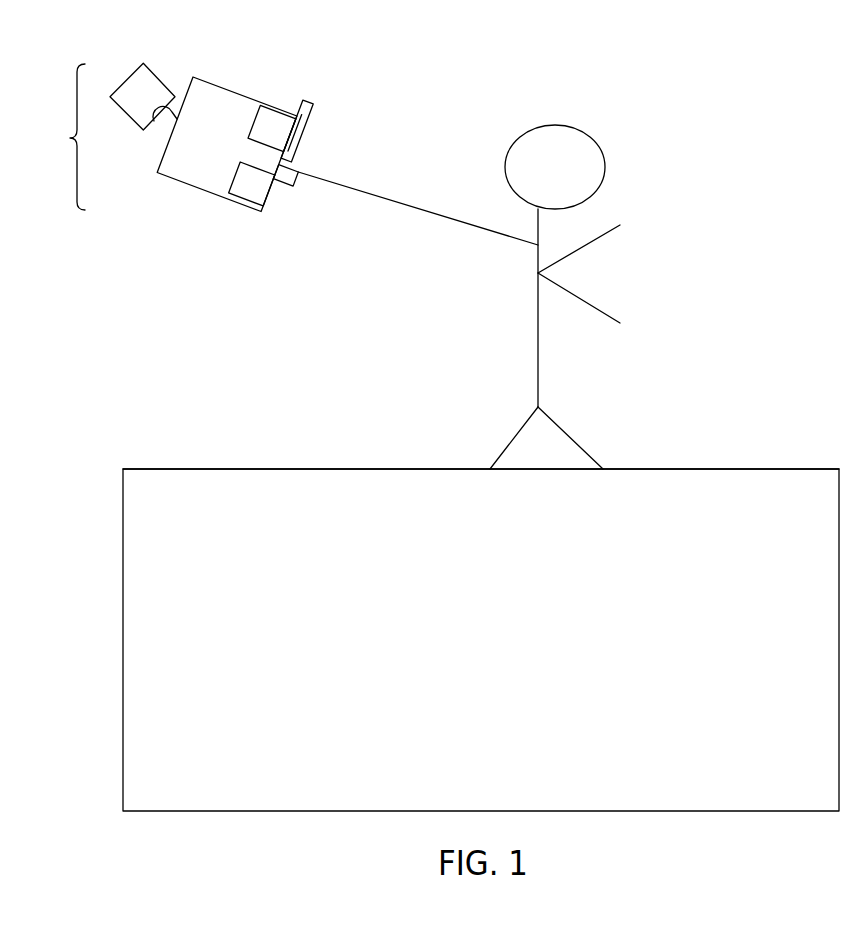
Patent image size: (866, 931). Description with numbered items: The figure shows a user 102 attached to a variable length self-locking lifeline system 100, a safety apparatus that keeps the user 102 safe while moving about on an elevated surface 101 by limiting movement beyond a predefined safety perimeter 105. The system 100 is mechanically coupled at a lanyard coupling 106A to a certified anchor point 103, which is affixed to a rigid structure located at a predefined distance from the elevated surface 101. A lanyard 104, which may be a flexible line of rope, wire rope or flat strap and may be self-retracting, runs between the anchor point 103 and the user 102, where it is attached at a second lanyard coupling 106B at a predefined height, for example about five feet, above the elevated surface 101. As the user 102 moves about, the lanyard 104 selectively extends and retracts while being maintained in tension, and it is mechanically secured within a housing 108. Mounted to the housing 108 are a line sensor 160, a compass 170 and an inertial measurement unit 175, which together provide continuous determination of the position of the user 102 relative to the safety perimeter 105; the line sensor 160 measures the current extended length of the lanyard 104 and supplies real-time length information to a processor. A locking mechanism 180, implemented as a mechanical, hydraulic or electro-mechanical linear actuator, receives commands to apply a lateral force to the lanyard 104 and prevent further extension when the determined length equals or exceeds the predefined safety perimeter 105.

The variable length self-locking lifeline system 100 is at (54, 137).
The elevated surface 101 is at (776, 462).
The user 102 is at (605, 167).
The anchor point 103 is at (122, 80).
The lanyard 104 is at (410, 204).
The predefined safety perimeter 105 is at (123, 469).
The lanyard coupling 106A is at (163, 127).
The lanyard coupling 106B is at (537, 247).
The housing 108 is at (190, 186).
The line sensor 160 is at (294, 187).
The compass 170 is at (243, 198).
The inertial measurement unit 175 is at (270, 112).
The locking mechanism 180 is at (325, 84).